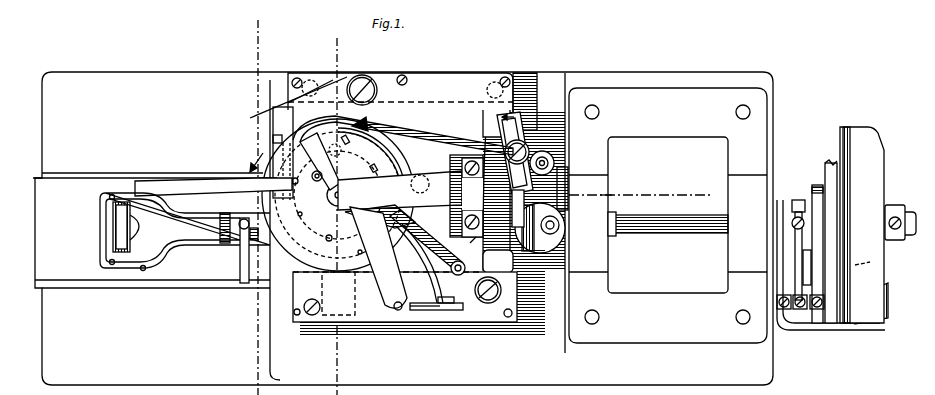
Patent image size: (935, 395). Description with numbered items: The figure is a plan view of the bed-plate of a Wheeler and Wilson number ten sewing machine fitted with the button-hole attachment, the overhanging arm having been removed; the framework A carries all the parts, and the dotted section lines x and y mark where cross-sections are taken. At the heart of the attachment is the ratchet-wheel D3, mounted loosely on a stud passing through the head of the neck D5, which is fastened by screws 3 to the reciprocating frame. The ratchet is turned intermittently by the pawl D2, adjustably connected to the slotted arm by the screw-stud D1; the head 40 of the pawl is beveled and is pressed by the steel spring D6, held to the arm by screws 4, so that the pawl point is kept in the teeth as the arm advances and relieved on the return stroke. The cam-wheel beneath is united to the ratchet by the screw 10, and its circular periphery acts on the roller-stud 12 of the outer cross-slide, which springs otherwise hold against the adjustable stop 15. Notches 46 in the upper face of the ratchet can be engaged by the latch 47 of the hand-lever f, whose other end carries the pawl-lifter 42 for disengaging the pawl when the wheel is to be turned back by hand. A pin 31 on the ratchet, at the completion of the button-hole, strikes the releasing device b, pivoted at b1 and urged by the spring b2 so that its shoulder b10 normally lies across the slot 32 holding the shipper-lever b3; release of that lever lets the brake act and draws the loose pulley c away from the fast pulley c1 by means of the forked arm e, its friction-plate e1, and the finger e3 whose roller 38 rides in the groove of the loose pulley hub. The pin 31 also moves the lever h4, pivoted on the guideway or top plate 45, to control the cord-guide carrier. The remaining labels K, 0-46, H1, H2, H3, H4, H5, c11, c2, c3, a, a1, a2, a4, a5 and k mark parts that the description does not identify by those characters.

The framework A is at (403, 228).
The section line x is at (334, 216).
The section line y y is at (252, 207).
The bracket K is at (293, 120).
The adjustable stop 15 is at (273, 139).
The ratchet-wheel D3 is at (330, 230).
The pawl-lifter 42 is at (327, 142).
The notches 46 is at (339, 205).
The screw 10 is at (308, 207).
The graduation range 0-46 is at (308, 218).
The latch 47 is at (354, 253).
The pin 31 is at (375, 160).
The roller-stud 12 is at (420, 176).
The neck D5 is at (400, 199).
The head of pawl 40 is at (476, 196).
The screw-stud D1 is at (554, 137).
The steel spring D6 is at (522, 132).
The screws 4 is at (553, 163).
The shaft H1 is at (678, 232).
The shaft axis H2 is at (639, 192).
The pivot H3 is at (565, 232).
The cam H4 is at (565, 240).
The shaft end H5 is at (593, 194).
The pawl D2 is at (437, 134).
The top plate 45 is at (372, 315).
The screw c11 is at (300, 312).
The hand-lever f is at (378, 258).
The releasing device b is at (426, 256).
The spring b2 is at (457, 255).
The screws 3 is at (474, 248).
The slot 32 is at (455, 313).
The shipper-lever b3 is at (420, 312).
The shoulder b10 is at (450, 293).
The pivot b1 is at (502, 290).
The lever h4 is at (213, 187).
The frame a is at (183, 248).
The inner frame a1 is at (173, 233).
The slot k is at (118, 240).
The slide a2 is at (235, 248).
The bracket a4 is at (832, 330).
The bracket end a5 is at (884, 301).
The fast pulley c1 is at (862, 225).
The loose pulley c is at (845, 150).
The plate c3 is at (818, 185).
The plate c2 is at (870, 262).
The friction-plate e1 is at (797, 200).
The forked arm e is at (795, 270).
The finger e3 is at (815, 312).
The roller 38 is at (862, 263).